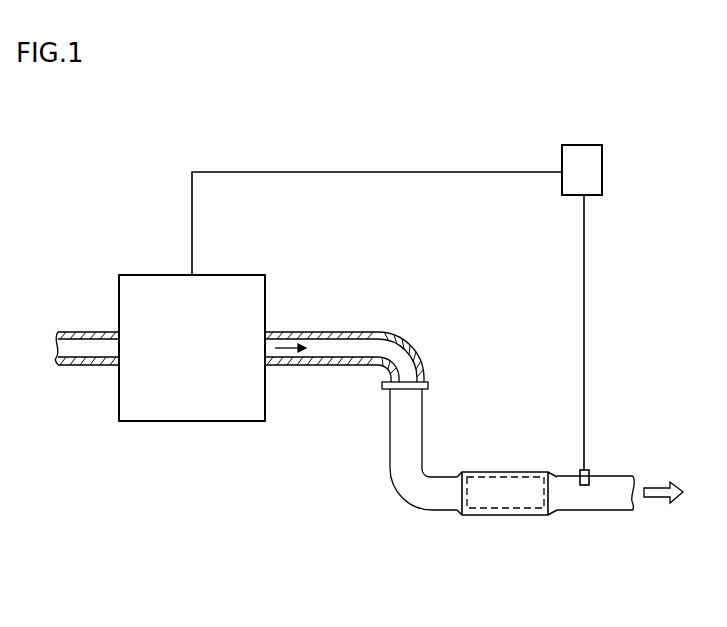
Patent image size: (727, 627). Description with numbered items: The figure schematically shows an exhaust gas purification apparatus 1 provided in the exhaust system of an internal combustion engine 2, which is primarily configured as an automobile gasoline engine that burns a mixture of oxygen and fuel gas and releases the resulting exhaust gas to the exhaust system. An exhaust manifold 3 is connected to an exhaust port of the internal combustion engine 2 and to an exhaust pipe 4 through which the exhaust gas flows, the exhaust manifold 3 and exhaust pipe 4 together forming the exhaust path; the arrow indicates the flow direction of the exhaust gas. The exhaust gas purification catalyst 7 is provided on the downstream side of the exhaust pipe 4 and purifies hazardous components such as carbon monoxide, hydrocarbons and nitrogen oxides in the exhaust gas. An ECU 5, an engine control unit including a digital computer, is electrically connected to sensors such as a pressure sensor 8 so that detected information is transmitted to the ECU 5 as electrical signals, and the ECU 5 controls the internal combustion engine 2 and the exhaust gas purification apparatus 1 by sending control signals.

The exhaust gas purification apparatus 1 is at (483, 519).
The internal combustion engine 2 is at (247, 266).
The exhaust manifold 3 is at (348, 331).
The exhaust pipe 4 is at (388, 428).
The ECU 5 is at (604, 162).
The exhaust gas purification catalyst 7 is at (523, 476).
The pressure sensor 8 is at (585, 488).